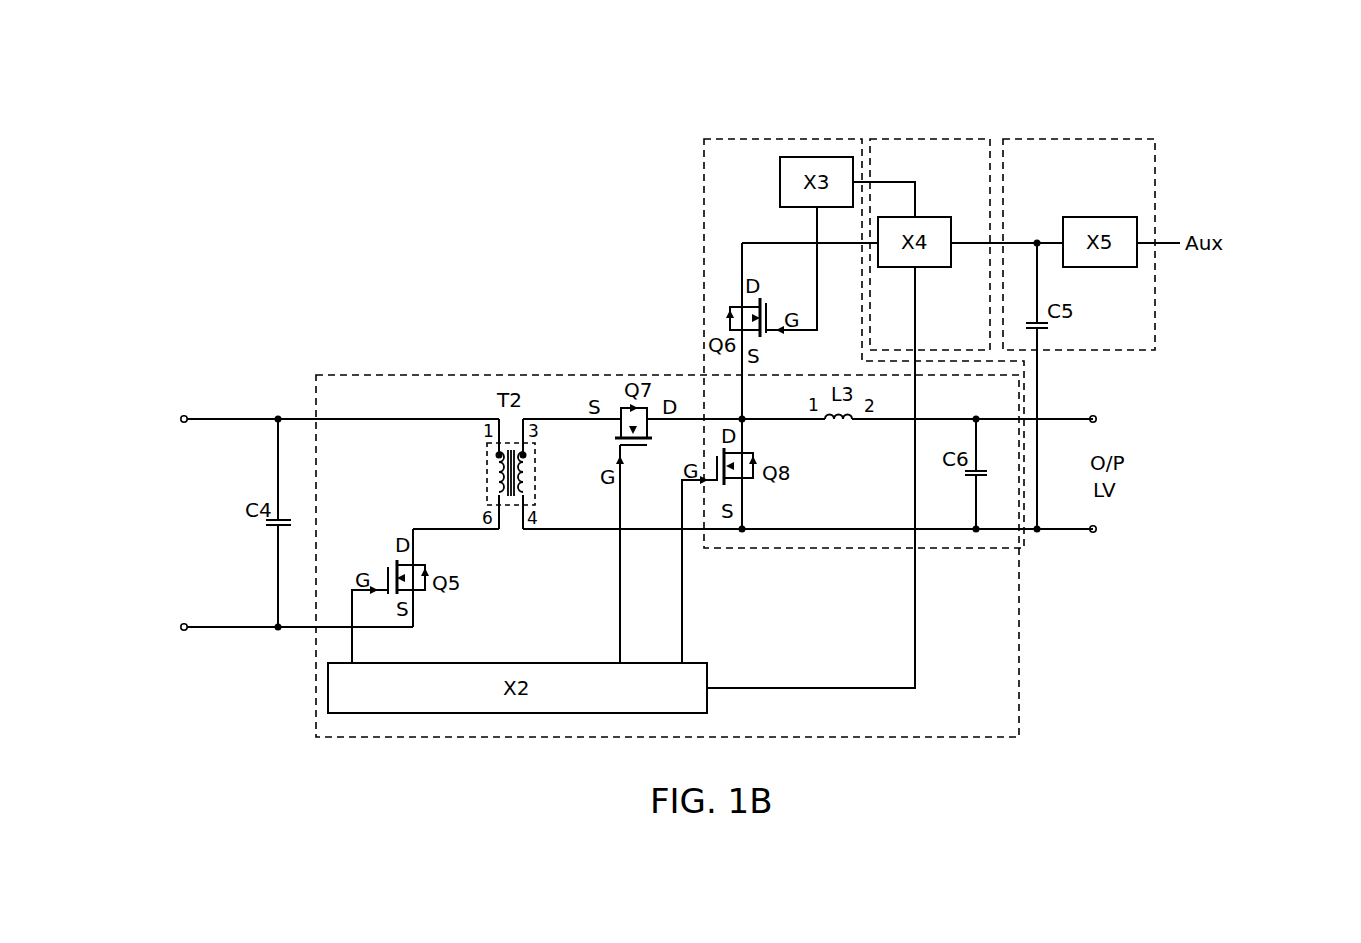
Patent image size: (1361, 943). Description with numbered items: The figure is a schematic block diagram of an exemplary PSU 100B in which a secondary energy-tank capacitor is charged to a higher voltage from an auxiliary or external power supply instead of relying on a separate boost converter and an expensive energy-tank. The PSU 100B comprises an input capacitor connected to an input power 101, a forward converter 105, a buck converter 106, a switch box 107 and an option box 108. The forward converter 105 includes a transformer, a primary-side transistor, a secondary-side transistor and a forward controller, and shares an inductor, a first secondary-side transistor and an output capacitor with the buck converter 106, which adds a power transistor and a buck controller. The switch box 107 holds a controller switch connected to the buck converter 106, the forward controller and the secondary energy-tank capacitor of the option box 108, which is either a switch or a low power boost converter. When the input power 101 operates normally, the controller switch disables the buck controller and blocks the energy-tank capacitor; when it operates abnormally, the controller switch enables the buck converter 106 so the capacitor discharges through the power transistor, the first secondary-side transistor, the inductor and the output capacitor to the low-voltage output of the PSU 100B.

The PSU 100B is at (1250, 88).
The input power 101 is at (183, 500).
The forward converter 105 is at (388, 375).
The buck converter 106 is at (742, 139).
The switch box 107 is at (932, 139).
The option box 108 is at (1062, 139).